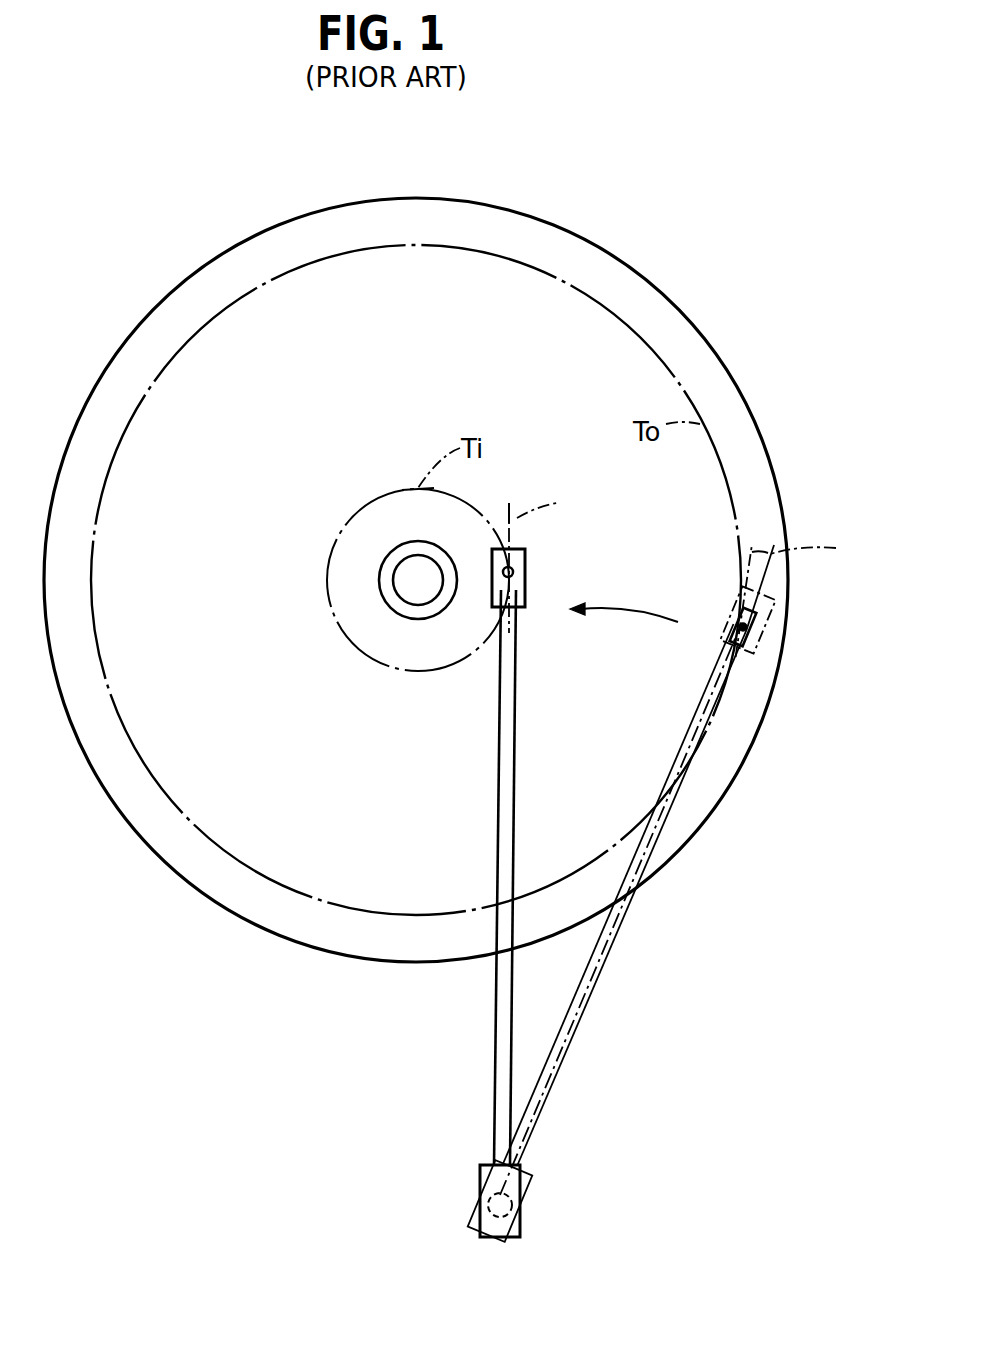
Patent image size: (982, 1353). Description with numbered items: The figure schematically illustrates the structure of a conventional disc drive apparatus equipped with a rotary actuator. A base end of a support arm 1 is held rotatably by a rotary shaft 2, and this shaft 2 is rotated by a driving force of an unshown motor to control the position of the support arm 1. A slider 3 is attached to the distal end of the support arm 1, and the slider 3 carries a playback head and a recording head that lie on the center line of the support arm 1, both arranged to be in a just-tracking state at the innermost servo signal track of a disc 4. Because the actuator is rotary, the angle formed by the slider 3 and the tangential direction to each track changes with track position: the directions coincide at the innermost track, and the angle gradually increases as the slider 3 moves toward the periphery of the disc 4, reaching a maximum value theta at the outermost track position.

The support arm 1 is at (570, 1037).
The rotary shaft 2 is at (505, 1206).
The slider 3 is at (526, 560).
The disc 4 is at (684, 318).